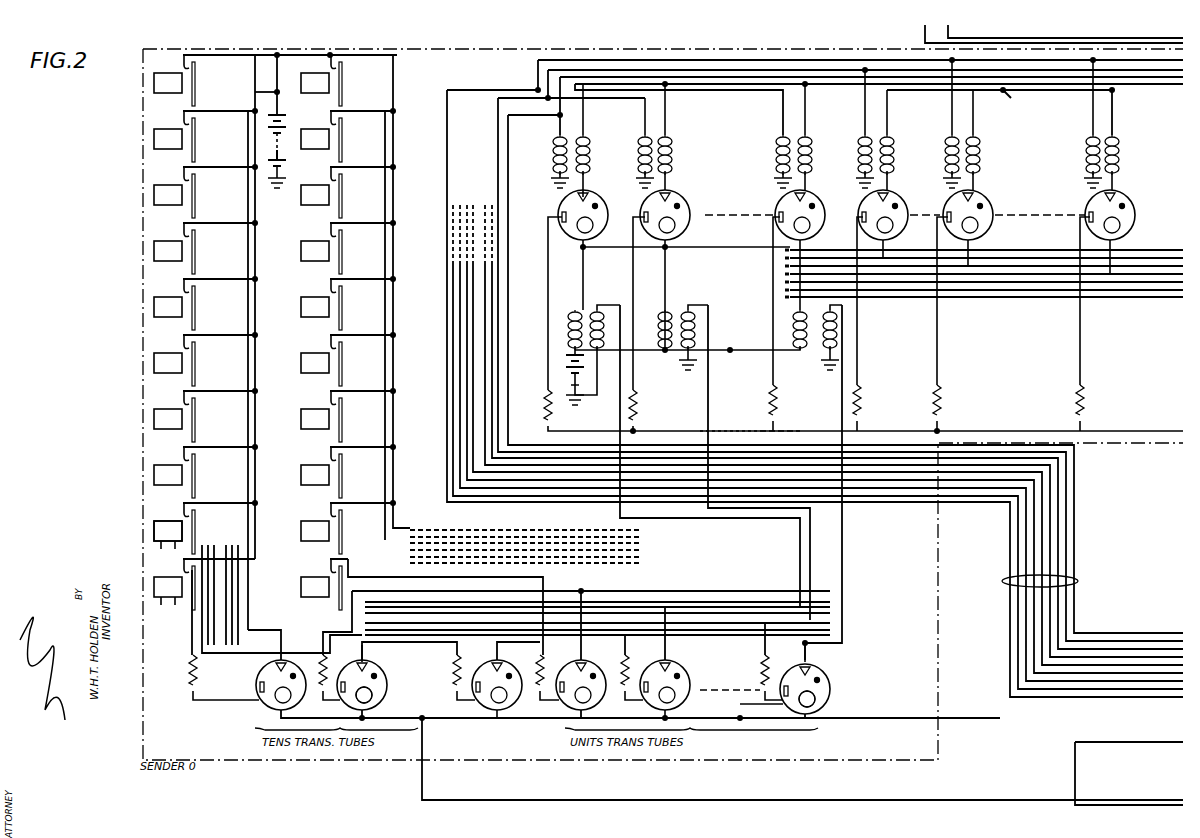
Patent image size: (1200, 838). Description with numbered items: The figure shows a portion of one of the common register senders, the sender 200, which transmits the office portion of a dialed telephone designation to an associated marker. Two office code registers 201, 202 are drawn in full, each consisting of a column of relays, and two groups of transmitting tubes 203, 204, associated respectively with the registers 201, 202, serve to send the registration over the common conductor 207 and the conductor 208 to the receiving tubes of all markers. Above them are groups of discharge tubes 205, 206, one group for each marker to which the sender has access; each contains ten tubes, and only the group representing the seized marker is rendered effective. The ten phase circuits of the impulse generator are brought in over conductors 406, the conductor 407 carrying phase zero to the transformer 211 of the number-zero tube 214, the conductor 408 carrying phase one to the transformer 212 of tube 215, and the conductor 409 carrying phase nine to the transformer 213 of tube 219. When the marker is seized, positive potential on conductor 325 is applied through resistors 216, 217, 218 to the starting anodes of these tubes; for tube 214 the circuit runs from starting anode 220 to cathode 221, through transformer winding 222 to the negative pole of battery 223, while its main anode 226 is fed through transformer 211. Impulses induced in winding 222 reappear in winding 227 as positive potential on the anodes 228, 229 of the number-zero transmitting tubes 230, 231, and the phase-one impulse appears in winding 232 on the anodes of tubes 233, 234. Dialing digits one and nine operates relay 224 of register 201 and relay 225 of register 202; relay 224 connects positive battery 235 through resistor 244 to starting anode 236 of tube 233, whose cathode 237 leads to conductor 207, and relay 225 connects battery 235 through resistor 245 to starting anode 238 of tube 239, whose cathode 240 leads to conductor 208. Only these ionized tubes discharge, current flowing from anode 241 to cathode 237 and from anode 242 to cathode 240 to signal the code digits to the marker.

The sender 200 is at (710, 54).
The office code register 201 is at (275, 341).
The office code register 202 is at (422, 355).
The group of transmitting tubes 203 is at (594, 683).
The group of transmitting tubes 204 is at (702, 682).
The group of discharge tubes 205 is at (754, 258).
The group of discharge tubes 206 is at (881, 247).
The common conductor 207 is at (931, 804).
The conductor 208 is at (981, 804).
The transformer 211 is at (589, 152).
The transformer 212 is at (671, 152).
The transformer 213 is at (810, 152).
The No. 0 tube 214 is at (599, 212).
The tube 215 is at (690, 212).
The resistor 216 is at (543, 400).
The resistor 217 is at (638, 400).
The resistor 218 is at (780, 398).
The tube 219 is at (825, 214).
The starting anode 220 is at (558, 217).
The cathode 221 is at (583, 245).
The transformer winding 222 is at (582, 312).
The battery 223 is at (570, 400).
The relay 224 is at (164, 520).
The relay 225 is at (300, 92).
The main anode 226 is at (588, 196).
The transformer winding 227 is at (596, 306).
The anode 228 is at (260, 669).
The anode 229 is at (582, 664).
The No. 0 transmitting tube 230 is at (258, 682).
The No. 0 transmitting tube 231 is at (564, 702).
The transformer winding 232 is at (683, 306).
The transmitting tube 233 is at (384, 687).
The transmitting tube 234 is at (683, 700).
The battery 235 is at (290, 146).
The starting anode 236 is at (343, 701).
The cathode 237 is at (376, 698).
The starting anode 238 is at (777, 708).
The tube 239 is at (834, 682).
The cathode 240 is at (812, 701).
The anode 241 is at (368, 660).
The anode 242 is at (810, 664).
The resistor 244 is at (326, 669).
The resistor 245 is at (769, 669).
The conductor 325 is at (797, 432).
The conductors 406 is at (1078, 584).
The conductor 407 is at (502, 169).
The conductor 408 is at (505, 273).
The conductor 409 is at (447, 145).